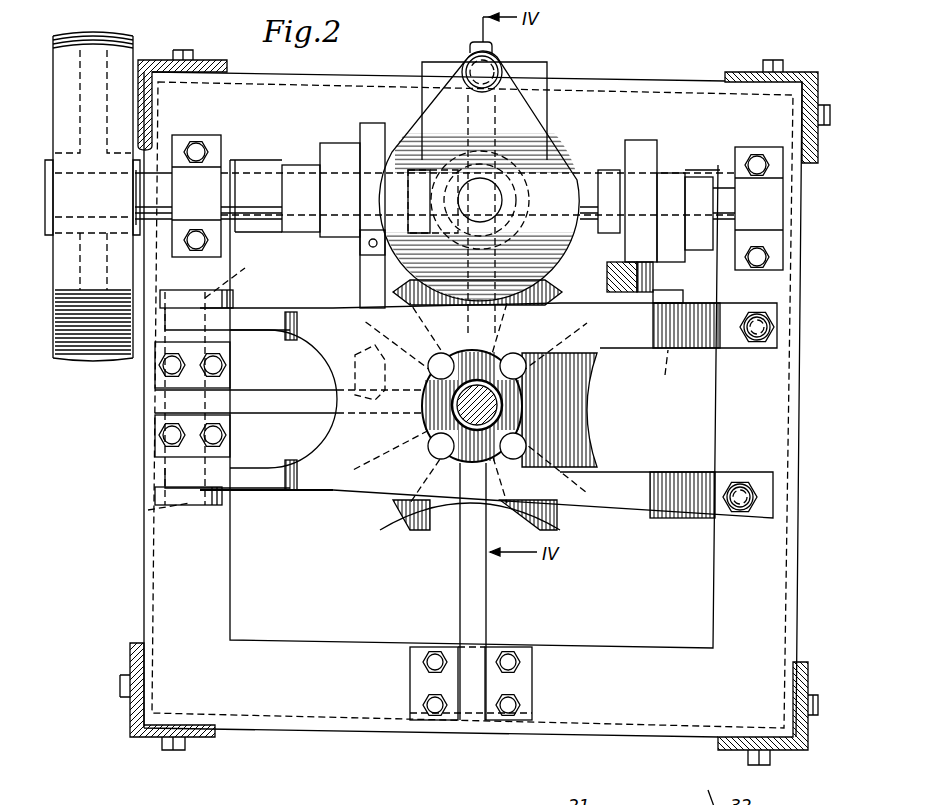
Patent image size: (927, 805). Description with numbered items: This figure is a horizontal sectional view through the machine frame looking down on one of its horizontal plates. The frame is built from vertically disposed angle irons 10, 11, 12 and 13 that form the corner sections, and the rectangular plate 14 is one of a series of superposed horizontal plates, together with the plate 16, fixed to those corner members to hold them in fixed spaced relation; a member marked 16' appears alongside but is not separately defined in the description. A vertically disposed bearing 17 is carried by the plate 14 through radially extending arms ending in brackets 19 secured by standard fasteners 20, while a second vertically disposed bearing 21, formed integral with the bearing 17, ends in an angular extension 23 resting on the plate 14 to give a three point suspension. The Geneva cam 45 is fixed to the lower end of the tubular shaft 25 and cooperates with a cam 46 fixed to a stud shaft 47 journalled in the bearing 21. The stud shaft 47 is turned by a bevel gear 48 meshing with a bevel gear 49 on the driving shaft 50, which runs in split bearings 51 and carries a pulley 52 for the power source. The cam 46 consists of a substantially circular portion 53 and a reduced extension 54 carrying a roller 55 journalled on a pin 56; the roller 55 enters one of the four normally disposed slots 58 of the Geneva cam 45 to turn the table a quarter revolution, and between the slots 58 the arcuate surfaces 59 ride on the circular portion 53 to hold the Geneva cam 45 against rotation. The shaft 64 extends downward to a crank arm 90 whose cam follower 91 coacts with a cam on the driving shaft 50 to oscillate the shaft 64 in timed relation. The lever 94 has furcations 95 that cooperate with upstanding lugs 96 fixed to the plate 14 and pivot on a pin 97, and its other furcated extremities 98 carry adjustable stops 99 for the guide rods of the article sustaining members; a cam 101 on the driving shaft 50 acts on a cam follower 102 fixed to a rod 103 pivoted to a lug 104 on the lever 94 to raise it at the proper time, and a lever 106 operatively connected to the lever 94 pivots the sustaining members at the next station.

The angle iron 10 is at (150, 62).
The angle iron 11 is at (130, 725).
The angle iron 12 is at (805, 80).
The angle iron 13 is at (803, 752).
The rectangular plate 14 is at (617, 92).
The rectangular plate 16 is at (491, 591).
The horizontal frame arm 16' is at (290, 399).
The bearing 17 is at (560, 438).
The bracket 19 is at (160, 428).
The fastener 20 is at (208, 368).
The bearing 21 is at (553, 272).
The angular extension 23 is at (476, 46).
The tubular shaft 25 is at (545, 420).
The Geneva cam 45 is at (398, 545).
The cam 46 is at (558, 160).
The stud shaft 47 is at (490, 190).
The bevel gear 48 is at (523, 213).
The bevel gear 49 is at (440, 162).
The driving shaft 50 is at (262, 212).
The split bearing 51 is at (210, 212).
The pulley 52 is at (90, 42).
The circular portion 53 is at (545, 283).
The reduced extension 54 is at (455, 97).
The roller 55 is at (478, 68).
The pin 56 is at (474, 78).
The slot 58 is at (397, 365).
The arcuate surface 59 is at (575, 382).
The shaft 64 is at (545, 410).
The crank arm 90 is at (360, 358).
The cam follower 91 is at (362, 245).
The lever 94 is at (321, 480).
The furcation 95 is at (263, 326).
The upstanding lug 96 is at (222, 305).
The pin 97 is at (180, 390).
The furcated extremity 98 is at (690, 349).
The stop 99 is at (757, 327).
The cam 101 is at (645, 147).
The cam follower 102 is at (617, 185).
The rod 103 is at (667, 197).
The lug 104 is at (674, 374).
The lever 106 is at (619, 294).